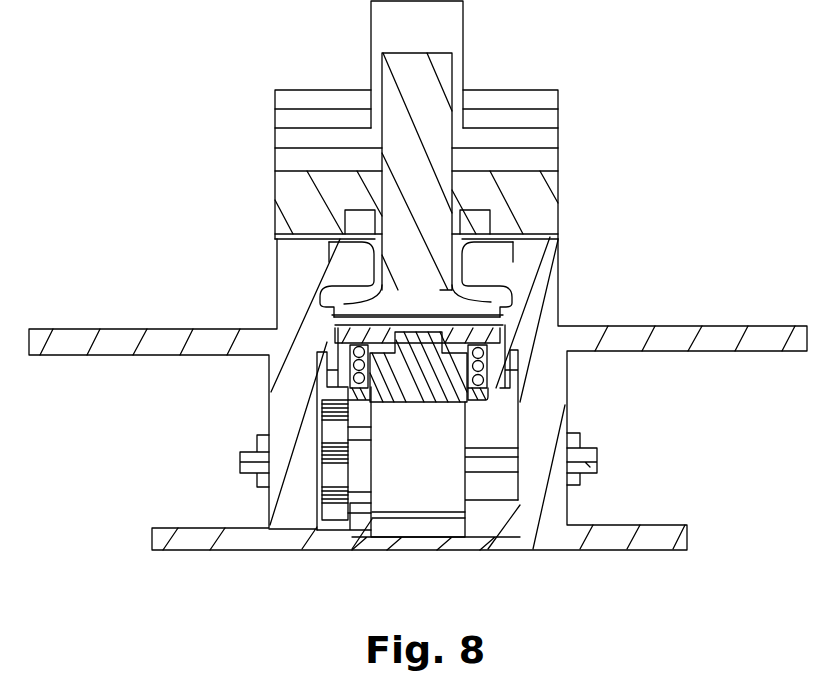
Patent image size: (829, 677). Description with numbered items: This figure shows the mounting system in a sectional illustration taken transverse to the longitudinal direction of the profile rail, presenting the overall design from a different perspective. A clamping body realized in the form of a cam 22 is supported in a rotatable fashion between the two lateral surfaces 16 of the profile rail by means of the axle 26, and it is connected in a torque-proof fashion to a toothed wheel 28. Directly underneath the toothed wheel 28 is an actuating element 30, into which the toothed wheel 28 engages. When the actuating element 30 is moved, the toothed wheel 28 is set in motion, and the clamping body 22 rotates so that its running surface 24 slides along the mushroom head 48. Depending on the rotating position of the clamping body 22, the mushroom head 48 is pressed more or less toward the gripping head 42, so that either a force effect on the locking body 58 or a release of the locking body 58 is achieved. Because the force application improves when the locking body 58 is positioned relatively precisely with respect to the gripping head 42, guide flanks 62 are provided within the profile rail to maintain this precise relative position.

The lateral surfaces 16 is at (278, 402).
The clamping body 22 is at (443, 492).
The running surface 24 is at (450, 467).
The axle 26 is at (588, 470).
The toothed wheel 28 is at (318, 518).
The actuating element 30 is at (327, 527).
The gripping head 42 is at (520, 323).
The mushroom head 48 is at (418, 403).
The locking body 58 is at (514, 240).
The guide flanks 62 is at (484, 300).